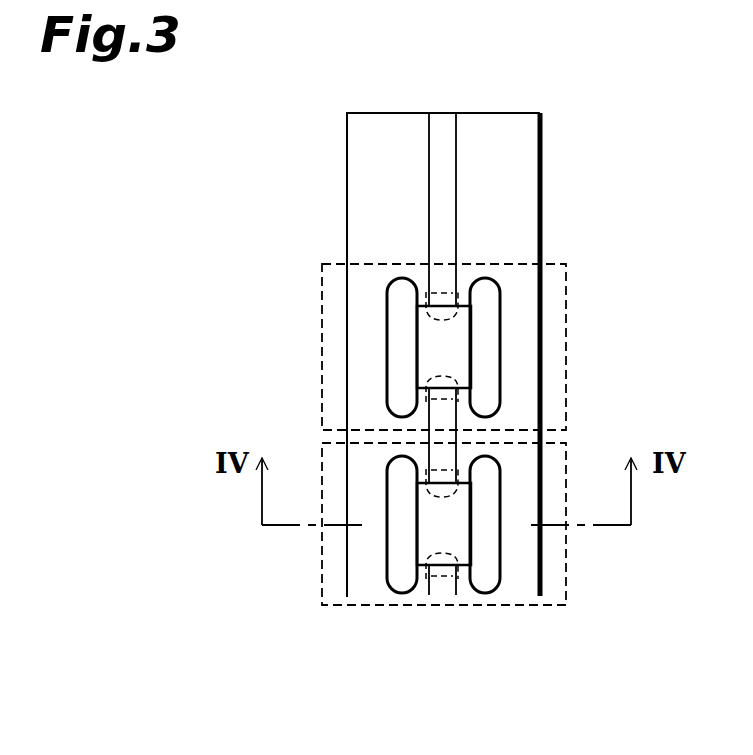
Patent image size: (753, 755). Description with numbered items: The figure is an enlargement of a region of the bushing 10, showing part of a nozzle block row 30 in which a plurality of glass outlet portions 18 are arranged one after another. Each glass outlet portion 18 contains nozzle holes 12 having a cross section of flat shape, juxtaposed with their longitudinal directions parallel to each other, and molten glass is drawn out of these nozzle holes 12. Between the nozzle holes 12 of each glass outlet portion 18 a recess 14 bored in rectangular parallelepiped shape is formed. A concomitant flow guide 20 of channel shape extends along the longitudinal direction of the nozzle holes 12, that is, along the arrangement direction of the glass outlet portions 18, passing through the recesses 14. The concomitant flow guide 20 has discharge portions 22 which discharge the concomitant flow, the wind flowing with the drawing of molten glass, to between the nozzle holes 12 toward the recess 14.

The bushing 10 is at (583, 92).
The nozzle holes 12 is at (405, 348).
The recess 14 is at (435, 338).
The glass outlet portion 18 is at (566, 276).
The concomitant flow guide 20 is at (443, 136).
The discharge portions 22 is at (433, 298).
The nozzle block row 30 is at (542, 165).